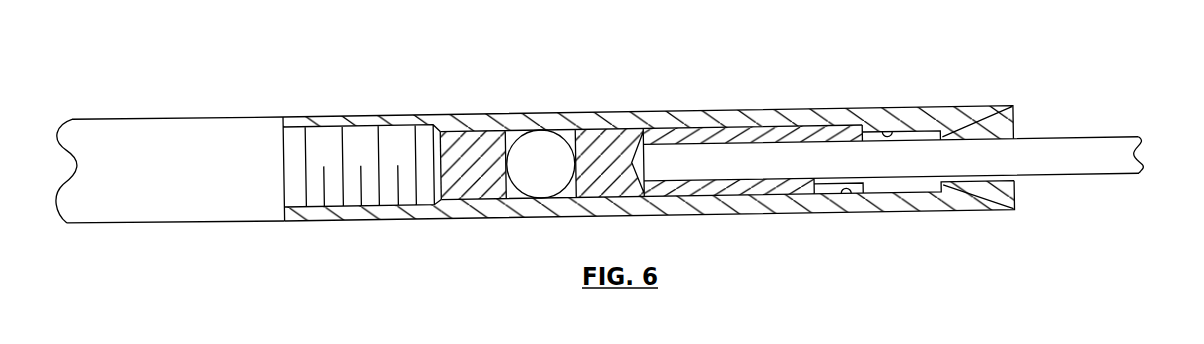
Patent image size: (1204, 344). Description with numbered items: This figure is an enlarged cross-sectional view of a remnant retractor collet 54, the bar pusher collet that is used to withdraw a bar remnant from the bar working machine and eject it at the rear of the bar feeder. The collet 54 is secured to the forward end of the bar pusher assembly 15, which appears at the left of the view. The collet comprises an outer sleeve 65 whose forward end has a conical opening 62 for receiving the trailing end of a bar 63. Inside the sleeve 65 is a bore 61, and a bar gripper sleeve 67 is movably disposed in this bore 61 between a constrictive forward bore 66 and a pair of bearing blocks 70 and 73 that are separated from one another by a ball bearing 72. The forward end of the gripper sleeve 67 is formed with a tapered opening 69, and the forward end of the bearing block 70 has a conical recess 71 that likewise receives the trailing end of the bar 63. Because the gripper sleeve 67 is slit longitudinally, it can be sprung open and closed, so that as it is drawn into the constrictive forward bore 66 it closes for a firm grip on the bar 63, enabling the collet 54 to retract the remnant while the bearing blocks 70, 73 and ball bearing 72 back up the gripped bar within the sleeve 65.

The bar pusher assembly 15 is at (197, 223).
The remnant retractor collet 54 is at (959, 41).
The bore 61 is at (848, 192).
The conical opening 62 is at (998, 125).
The bar 63 is at (1112, 175).
The sleeve 65 is at (342, 115).
The constrictive forward bore 66 is at (893, 132).
The bar gripper sleeve 67 is at (760, 187).
The tapered opening 69 is at (803, 183).
The bearing block 70 is at (607, 135).
The conical recess 71 is at (648, 142).
The ball bearing 72 is at (539, 135).
The bearing block 73 is at (463, 133).